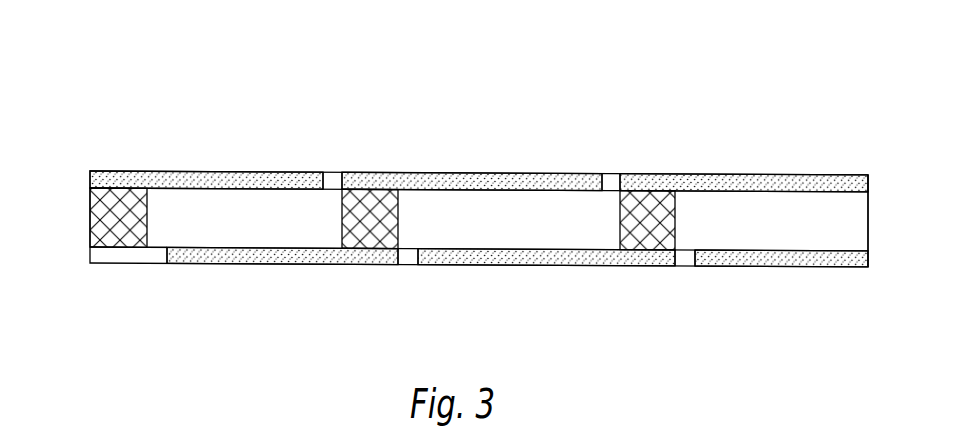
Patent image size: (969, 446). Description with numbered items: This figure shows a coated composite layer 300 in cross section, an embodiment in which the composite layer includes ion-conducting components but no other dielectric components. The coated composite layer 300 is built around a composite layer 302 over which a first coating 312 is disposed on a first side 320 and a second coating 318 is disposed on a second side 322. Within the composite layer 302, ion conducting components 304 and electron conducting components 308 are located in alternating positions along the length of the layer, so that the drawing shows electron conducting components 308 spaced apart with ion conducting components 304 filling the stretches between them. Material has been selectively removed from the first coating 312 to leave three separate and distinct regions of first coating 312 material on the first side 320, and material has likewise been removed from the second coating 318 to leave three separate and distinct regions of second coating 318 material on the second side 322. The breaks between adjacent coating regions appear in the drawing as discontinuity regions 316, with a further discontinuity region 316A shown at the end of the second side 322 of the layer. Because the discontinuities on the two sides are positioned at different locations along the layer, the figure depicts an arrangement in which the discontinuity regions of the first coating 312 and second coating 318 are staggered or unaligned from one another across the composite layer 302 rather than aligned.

The coated composite layer 300 is at (137, 68).
The composite layer 302 is at (82, 189).
The ion conducting components 304 is at (265, 238).
The electron conducting components 308 is at (115, 236).
The first coating 312 is at (213, 180).
The gap 316 is at (333, 180).
The gap 316A is at (138, 257).
The second coating 318 is at (238, 263).
The first side 320 is at (870, 187).
The second side 322 is at (872, 260).